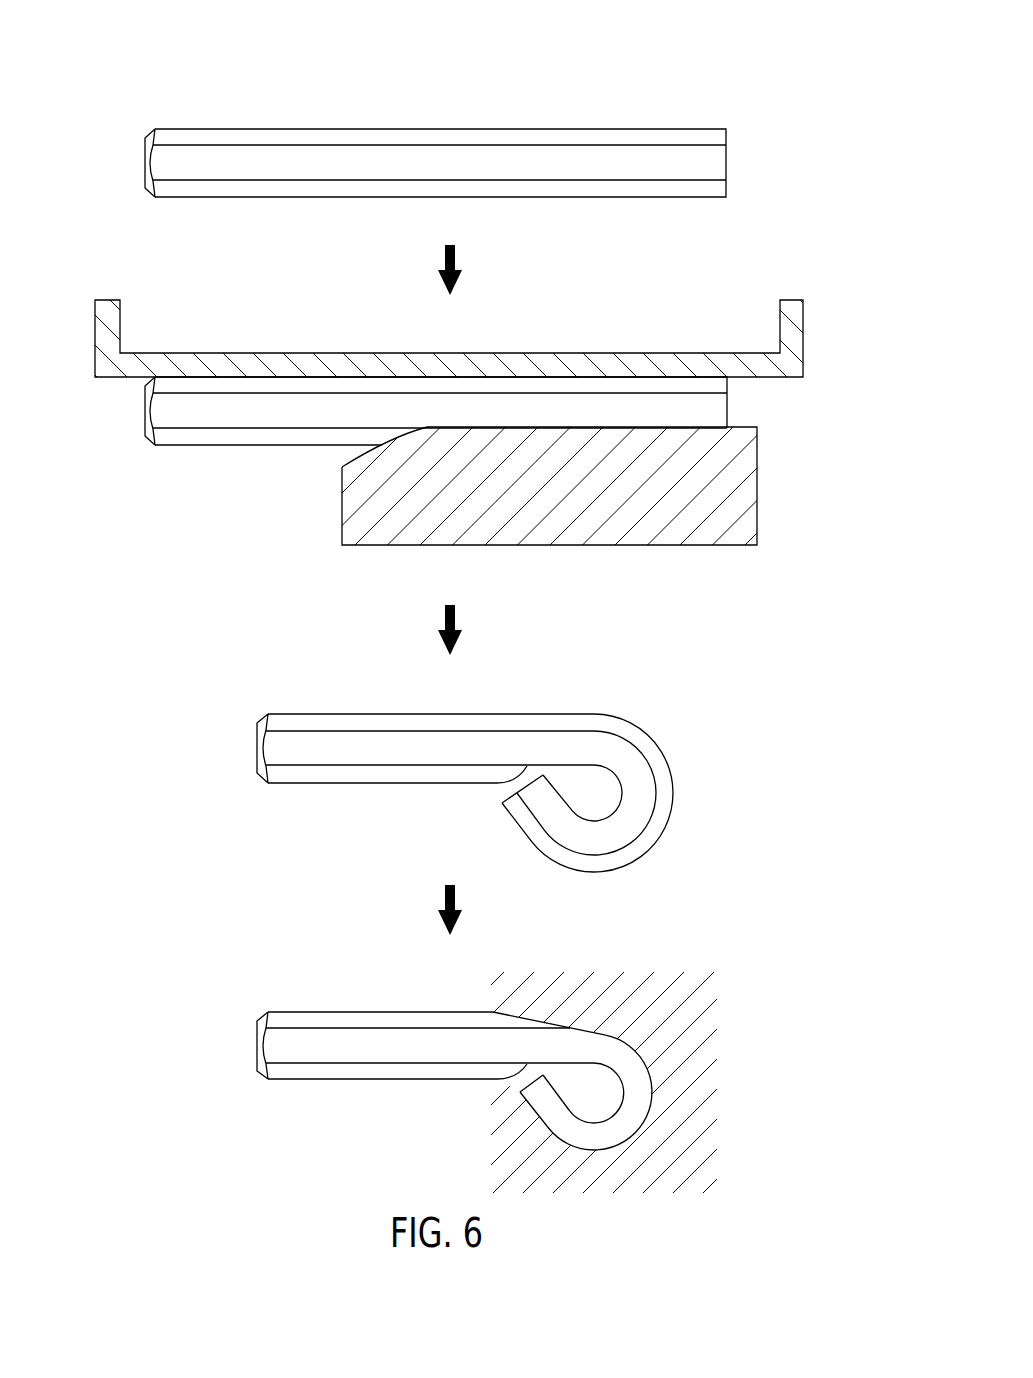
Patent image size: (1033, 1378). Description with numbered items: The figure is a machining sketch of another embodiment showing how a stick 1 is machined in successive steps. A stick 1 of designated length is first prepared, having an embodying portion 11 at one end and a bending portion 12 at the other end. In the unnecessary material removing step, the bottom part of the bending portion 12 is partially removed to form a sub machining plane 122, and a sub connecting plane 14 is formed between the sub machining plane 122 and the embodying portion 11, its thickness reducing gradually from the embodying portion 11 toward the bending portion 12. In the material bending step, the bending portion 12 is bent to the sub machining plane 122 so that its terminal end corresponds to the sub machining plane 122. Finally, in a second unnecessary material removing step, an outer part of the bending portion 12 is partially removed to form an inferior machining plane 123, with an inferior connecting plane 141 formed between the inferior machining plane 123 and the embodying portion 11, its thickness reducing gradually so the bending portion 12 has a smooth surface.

The stick 1 is at (222, 112).
The embodying portion 11 is at (183, 190).
The bending portion 12 is at (688, 190).
The sub connecting plane 14 is at (400, 430).
The sub machining plane 122 is at (596, 428).
The inferior machining plane 123 is at (650, 1113).
The inferior connecting plane 141 is at (540, 1015).